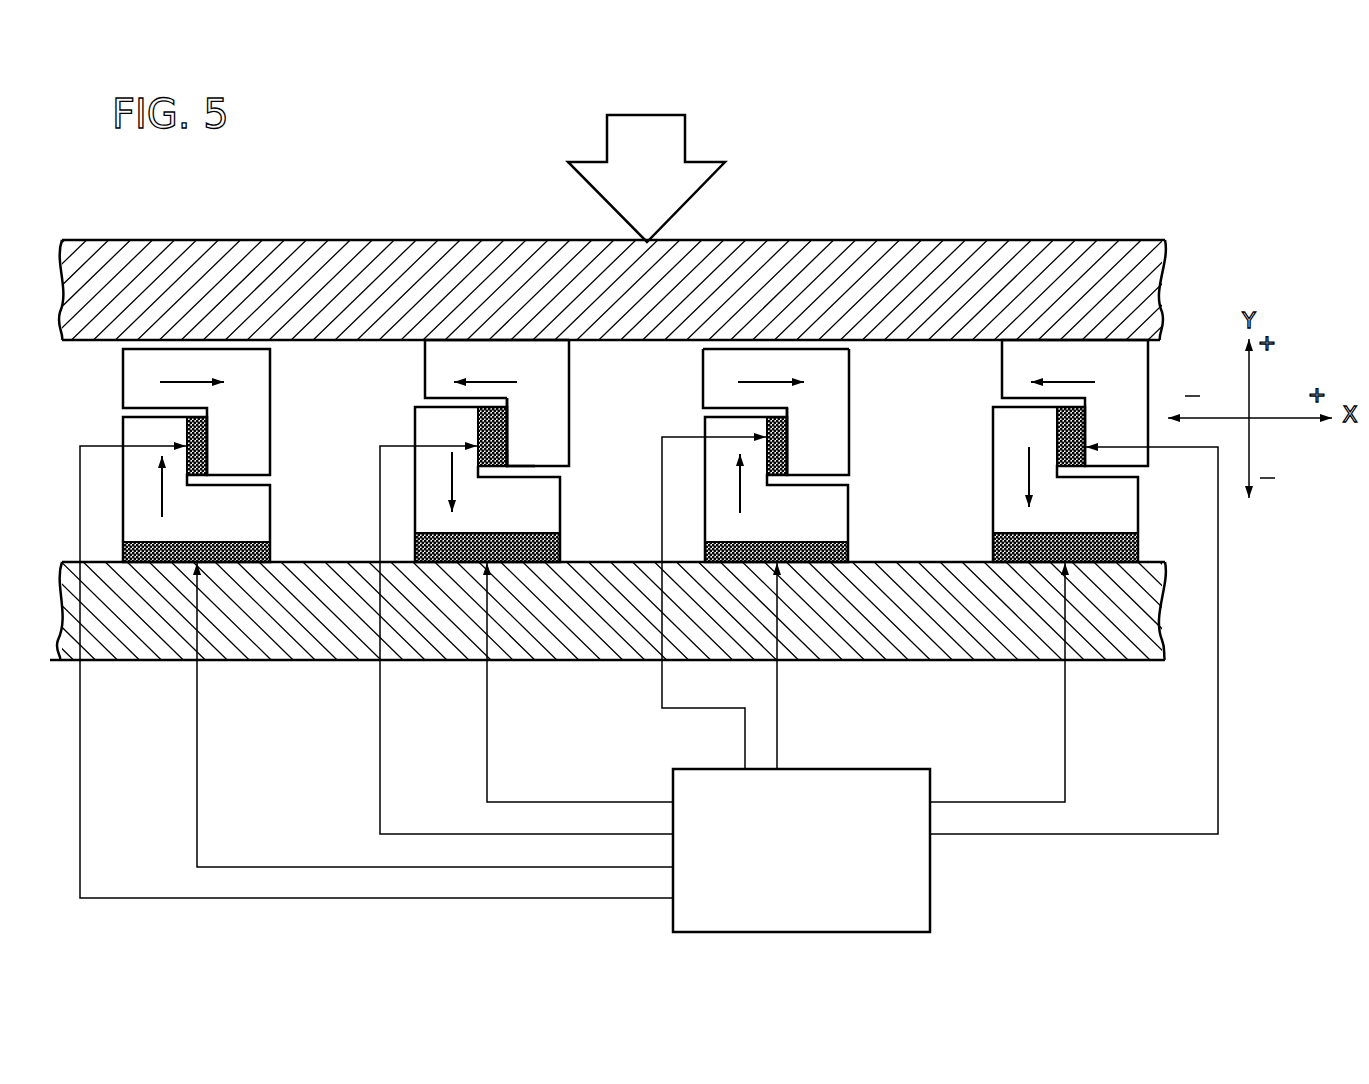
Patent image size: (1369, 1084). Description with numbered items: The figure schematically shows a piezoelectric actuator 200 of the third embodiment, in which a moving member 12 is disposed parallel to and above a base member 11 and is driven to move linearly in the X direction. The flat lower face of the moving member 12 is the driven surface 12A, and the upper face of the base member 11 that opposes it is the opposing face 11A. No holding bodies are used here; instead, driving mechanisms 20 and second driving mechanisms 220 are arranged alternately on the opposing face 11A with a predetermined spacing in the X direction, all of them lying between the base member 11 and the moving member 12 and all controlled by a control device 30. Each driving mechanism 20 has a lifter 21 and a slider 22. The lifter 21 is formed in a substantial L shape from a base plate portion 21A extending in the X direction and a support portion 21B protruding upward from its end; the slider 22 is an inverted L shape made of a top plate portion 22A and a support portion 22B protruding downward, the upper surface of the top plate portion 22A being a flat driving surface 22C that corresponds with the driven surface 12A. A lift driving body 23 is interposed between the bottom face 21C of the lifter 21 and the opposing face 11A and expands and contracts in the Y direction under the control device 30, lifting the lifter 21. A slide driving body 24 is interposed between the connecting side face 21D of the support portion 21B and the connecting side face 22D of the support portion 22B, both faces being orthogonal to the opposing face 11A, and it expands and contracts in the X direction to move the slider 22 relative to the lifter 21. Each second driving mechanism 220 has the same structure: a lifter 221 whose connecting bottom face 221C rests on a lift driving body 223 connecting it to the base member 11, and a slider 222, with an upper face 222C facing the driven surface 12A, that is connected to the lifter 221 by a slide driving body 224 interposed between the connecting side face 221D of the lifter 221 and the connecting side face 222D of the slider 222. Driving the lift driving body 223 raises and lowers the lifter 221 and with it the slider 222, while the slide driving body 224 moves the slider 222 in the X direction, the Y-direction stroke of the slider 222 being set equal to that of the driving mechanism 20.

The piezoelectric actuator 200 is at (850, 178).
The moving member 12 is at (796, 236).
The driven surface 12A is at (634, 342).
The base member 11 is at (525, 670).
The opposing face 11A is at (612, 563).
The driving mechanism 20 is at (405, 362).
The second driving mechanism 220 is at (292, 366).
The slider 22 is at (392, 165).
The top plate portion 22A is at (477, 362).
The support portion 22B is at (537, 425).
The driving surface 22C is at (541, 338).
The connecting side face 22D is at (477, 416).
The lifter 21 is at (318, 523).
The base plate portion 21A is at (507, 512).
The support portion 21B is at (433, 436).
The bottom face 21C is at (452, 540).
The connecting side face 21D is at (478, 420).
The lift driving body 23 is at (535, 532).
The slide driving body 24 is at (512, 458).
The slider 222 is at (852, 382).
The contact surface of first member 222C is at (744, 348).
The connecting side face 222D is at (788, 440).
The lifter 221 is at (852, 495).
The connecting side face 221D is at (788, 467).
The connecting bottom face 221C is at (823, 542).
The lift driving body 223 is at (703, 552).
The slide driving body 224 is at (768, 445).
The control device 30 is at (857, 768).